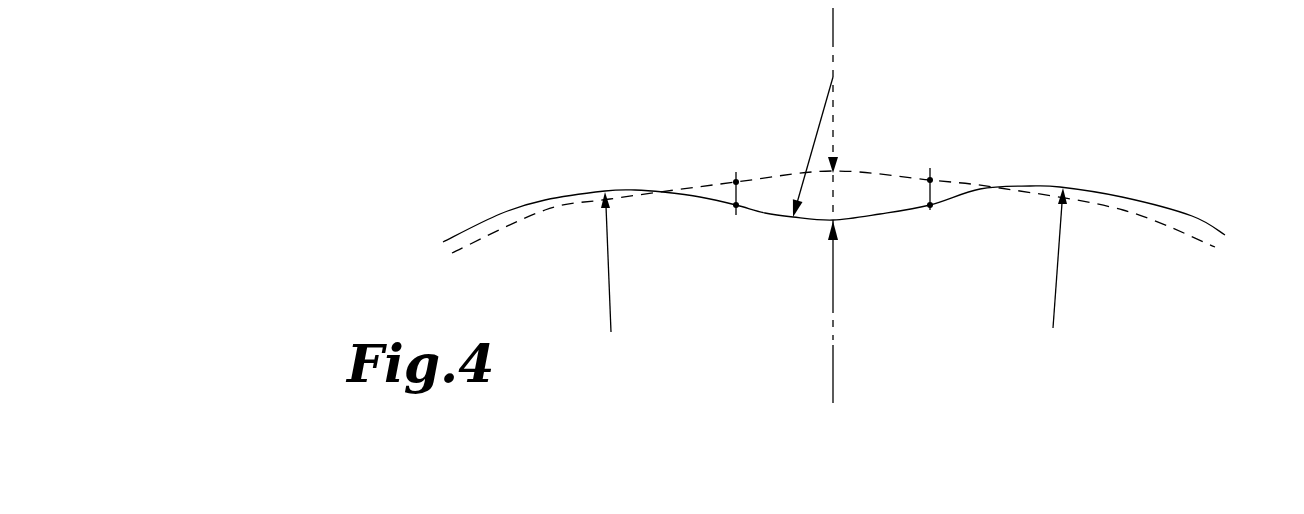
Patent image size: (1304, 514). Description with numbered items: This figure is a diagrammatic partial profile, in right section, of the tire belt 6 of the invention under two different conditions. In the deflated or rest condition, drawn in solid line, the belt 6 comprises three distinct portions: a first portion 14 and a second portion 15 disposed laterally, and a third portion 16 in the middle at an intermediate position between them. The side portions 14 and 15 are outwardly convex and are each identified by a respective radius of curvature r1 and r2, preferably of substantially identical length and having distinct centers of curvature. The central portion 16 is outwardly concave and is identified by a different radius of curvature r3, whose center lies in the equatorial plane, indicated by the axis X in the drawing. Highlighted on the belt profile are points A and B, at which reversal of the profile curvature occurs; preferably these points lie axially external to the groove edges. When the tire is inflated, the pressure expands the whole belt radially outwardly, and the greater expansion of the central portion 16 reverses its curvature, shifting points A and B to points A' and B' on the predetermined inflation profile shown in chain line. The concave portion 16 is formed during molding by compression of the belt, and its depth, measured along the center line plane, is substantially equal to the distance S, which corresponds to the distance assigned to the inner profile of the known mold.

The tire belt 6 is at (854, 212).
The first portion 14 is at (545, 200).
The second portion 15 is at (1122, 197).
The third portion 16 is at (765, 212).
The radius of curvature of first portion r1 is at (613, 282).
The radius of curvature of second portion r2 is at (1063, 275).
The radius of curvature of central portion r3 is at (809, 147).
The distance S is at (833, 196).
The point A is at (718, 225).
The point A' is at (717, 156).
The point B is at (948, 220).
The point B' is at (949, 151).
The central axis X is at (843, 204).